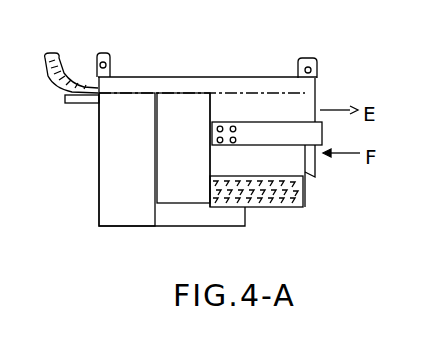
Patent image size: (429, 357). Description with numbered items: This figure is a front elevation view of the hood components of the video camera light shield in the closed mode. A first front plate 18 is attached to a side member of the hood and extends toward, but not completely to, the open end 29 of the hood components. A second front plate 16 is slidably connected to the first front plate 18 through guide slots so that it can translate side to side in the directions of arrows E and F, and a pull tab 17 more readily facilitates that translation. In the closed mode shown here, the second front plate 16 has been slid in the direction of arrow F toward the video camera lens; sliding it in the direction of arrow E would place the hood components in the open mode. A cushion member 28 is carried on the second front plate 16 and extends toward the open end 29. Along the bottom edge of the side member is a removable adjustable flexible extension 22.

The second front plate 16 is at (183, 148).
The pull tab 17 is at (303, 112).
The first front plate 18 is at (257, 150).
The removable adjustable flexible extension 22 is at (266, 206).
The cushion member 28 is at (137, 160).
The open end 29 is at (96, 102).